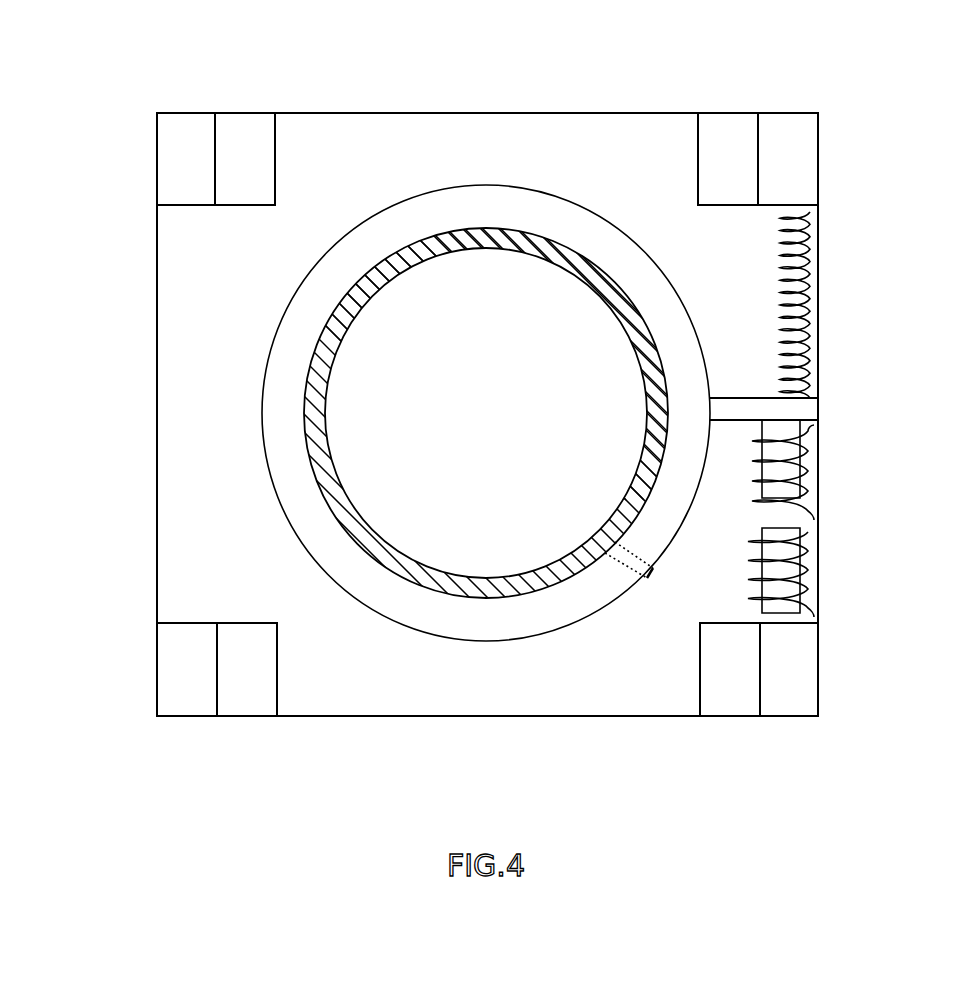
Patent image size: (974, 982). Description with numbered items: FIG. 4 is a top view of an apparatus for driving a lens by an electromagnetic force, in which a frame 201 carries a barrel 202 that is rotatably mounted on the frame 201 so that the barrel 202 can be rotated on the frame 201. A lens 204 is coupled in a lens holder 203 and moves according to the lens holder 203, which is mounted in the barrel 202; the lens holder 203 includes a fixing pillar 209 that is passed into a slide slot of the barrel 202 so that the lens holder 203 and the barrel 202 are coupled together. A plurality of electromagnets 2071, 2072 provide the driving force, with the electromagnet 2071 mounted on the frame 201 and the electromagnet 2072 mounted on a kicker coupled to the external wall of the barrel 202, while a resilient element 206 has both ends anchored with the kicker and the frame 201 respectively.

The frame 201 is at (805, 708).
The barrel 202 is at (500, 622).
The lens holder 203 is at (662, 383).
The lens 204 is at (483, 325).
The resilient element 206 is at (810, 225).
The electromagnet 2071 is at (810, 568).
The electromagnet 2072 is at (812, 432).
The fixing pillar 209 is at (633, 560).